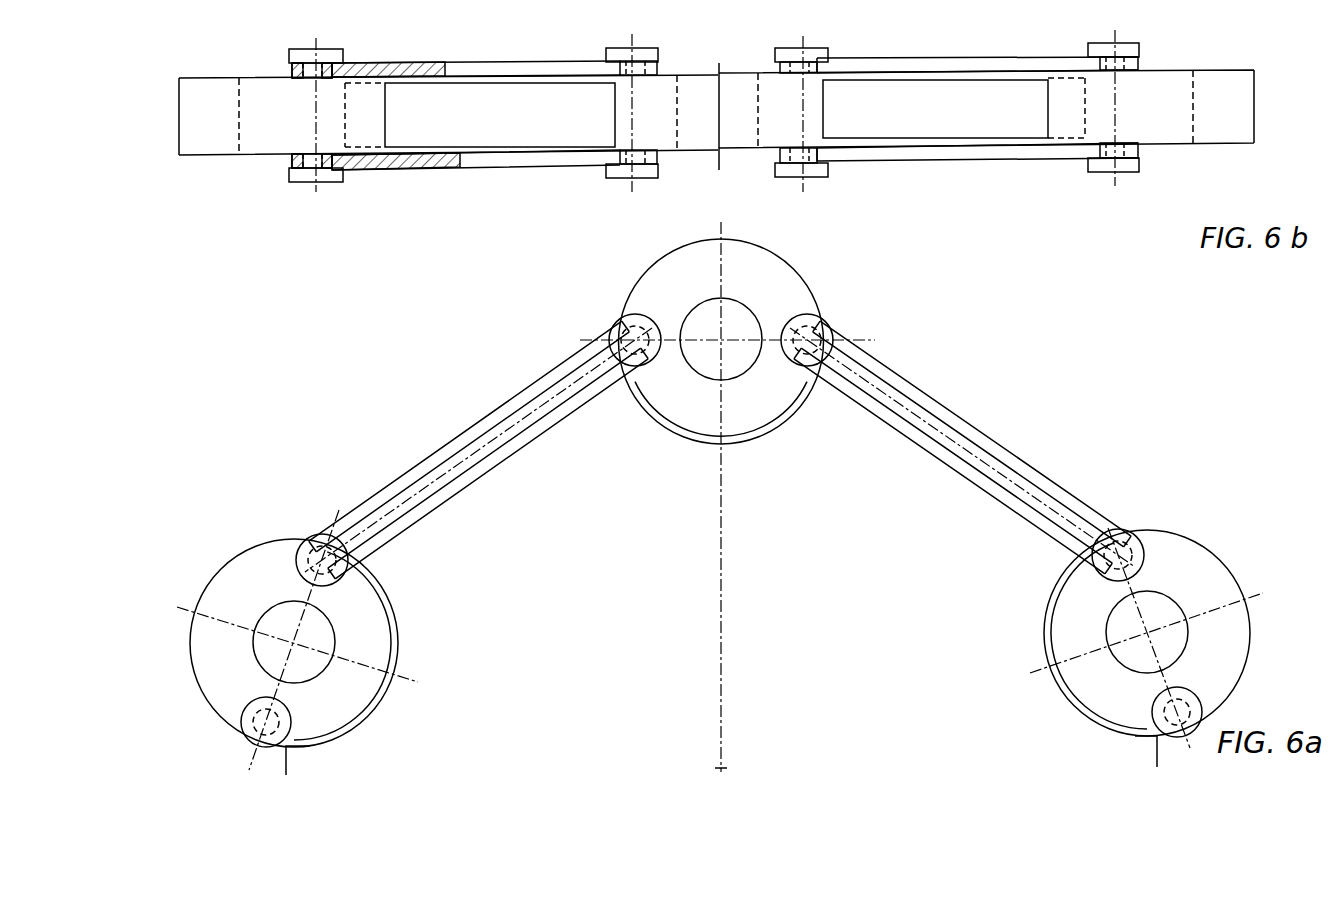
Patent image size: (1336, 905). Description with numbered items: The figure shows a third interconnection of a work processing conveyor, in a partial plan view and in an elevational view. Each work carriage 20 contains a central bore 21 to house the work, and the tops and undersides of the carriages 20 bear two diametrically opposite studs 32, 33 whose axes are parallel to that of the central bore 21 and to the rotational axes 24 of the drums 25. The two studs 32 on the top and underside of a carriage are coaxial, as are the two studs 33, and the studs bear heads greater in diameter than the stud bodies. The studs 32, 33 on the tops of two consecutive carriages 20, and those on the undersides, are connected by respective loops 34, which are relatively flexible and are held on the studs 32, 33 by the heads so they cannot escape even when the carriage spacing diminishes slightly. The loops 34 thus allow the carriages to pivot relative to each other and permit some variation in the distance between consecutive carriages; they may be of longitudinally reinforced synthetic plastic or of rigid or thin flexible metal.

In FIG. 6a, the work carriage 20 is at (775, 278).
In FIG. 6a, the central bore 21 is at (720, 490).
In FIG. 6a, the axis of rotation 24 is at (727, 768).
In FIG. 6a, the drum 25 is at (869, 578).
In FIG. 6b, the stud 32 is at (296, 56).
In FIG. 6b, the stud 33 is at (617, 52).
In FIG. 6b, the loop 34 is at (469, 62).
In FIG. 6a, the loop 34 is at (433, 447).